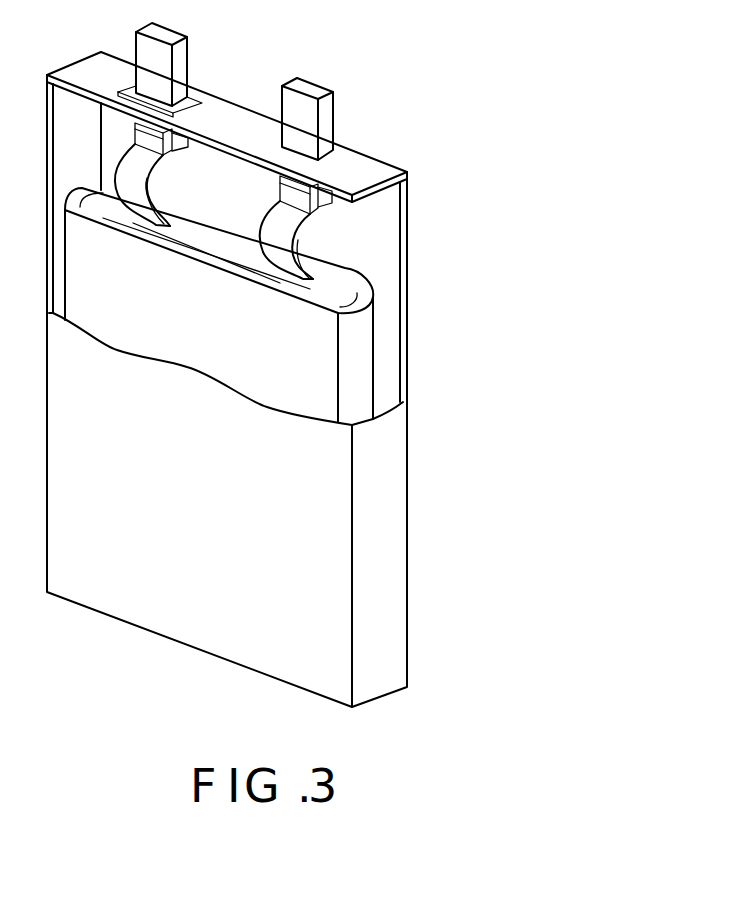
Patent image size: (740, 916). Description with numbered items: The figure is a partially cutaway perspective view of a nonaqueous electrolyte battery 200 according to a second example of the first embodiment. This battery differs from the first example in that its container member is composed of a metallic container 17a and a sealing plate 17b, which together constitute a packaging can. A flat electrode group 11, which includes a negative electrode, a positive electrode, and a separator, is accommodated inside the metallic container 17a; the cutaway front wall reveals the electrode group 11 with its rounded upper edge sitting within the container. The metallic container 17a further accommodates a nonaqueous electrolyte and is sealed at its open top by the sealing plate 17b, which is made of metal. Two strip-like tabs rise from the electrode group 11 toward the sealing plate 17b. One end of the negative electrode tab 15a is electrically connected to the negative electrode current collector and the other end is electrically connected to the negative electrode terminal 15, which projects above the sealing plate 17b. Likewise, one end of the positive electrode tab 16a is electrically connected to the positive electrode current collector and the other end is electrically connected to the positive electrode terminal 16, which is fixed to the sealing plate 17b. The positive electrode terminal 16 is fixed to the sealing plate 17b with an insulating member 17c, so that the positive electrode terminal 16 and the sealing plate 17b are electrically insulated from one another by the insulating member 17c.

The nonaqueous electrolyte battery 200 is at (312, 365).
The electrode group 11 is at (380, 320).
The negative electrode terminal 15 is at (328, 115).
The negative electrode tab 15a is at (282, 247).
The positive electrode terminal 16 is at (181, 58).
The positive electrode tab 16a is at (137, 185).
The metallic container 17a is at (388, 522).
The sealing plate 17b is at (347, 160).
The insulating member 17c is at (195, 100).